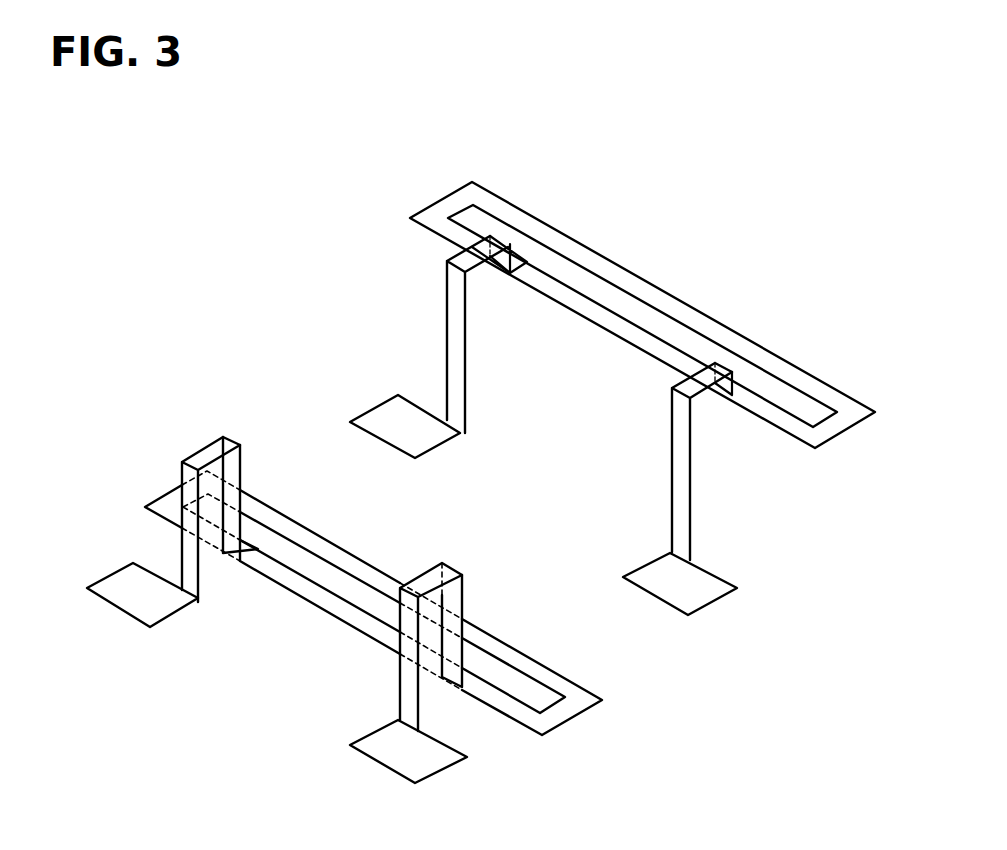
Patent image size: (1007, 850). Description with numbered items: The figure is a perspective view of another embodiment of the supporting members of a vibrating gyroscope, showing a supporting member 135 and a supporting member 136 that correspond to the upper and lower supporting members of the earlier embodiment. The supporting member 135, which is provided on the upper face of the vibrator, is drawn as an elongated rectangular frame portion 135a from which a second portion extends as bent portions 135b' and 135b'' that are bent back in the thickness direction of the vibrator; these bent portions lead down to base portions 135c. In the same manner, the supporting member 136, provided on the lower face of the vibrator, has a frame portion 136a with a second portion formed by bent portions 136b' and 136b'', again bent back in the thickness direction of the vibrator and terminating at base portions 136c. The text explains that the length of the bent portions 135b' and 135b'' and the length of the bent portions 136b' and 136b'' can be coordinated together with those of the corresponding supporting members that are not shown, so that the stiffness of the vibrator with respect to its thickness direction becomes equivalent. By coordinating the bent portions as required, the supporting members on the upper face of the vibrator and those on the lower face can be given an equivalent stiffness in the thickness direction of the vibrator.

The supporting member 135 is at (641, 369).
The frame bar of upper fixing frame 135a is at (501, 197).
The bent portion 135b' is at (543, 398).
The bent portion 135b'' is at (636, 353).
The base plate of upper fixing frame 135c is at (450, 436).
The supporting member 136 is at (355, 592).
The frame bar of lower fixing frame 136a is at (162, 500).
The bent portion 136b' is at (322, 584).
The bent portion 136b'' is at (393, 538).
The base plate of lower fixing frame 136c is at (150, 622).